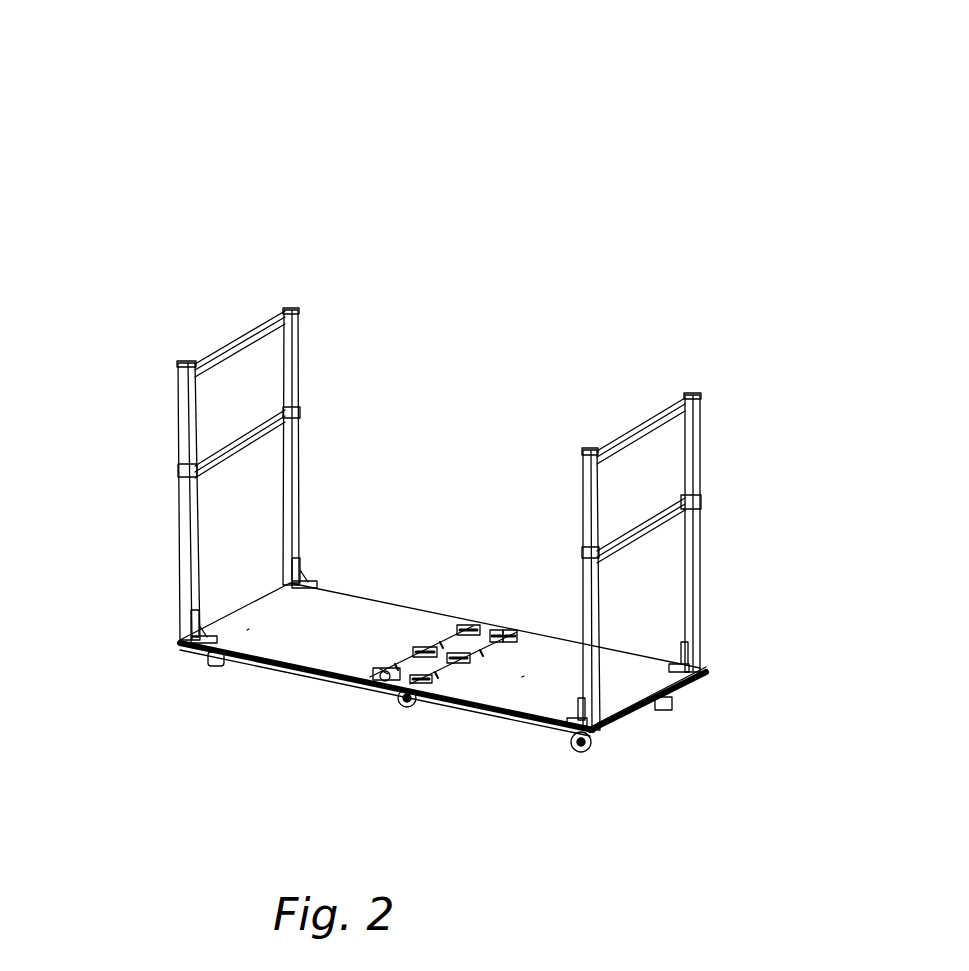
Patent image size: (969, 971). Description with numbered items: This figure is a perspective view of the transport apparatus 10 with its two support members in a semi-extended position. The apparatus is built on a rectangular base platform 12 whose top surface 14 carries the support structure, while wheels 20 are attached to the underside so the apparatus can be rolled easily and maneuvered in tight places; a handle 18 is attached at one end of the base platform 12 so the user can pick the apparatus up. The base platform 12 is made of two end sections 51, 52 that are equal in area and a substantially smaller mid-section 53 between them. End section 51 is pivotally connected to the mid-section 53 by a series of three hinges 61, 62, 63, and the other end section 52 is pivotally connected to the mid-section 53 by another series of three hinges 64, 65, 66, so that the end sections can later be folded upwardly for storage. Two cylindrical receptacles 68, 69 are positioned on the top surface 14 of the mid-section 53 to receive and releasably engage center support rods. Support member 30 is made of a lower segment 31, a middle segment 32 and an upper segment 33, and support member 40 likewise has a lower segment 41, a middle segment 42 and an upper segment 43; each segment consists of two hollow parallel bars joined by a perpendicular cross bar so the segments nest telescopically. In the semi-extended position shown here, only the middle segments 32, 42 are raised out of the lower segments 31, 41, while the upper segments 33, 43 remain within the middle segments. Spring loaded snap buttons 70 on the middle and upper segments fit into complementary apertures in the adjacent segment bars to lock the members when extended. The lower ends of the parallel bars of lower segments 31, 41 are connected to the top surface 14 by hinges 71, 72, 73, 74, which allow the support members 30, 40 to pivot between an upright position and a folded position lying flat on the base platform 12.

The transport apparatus 10 is at (146, 127).
The base platform 12 is at (264, 680).
The top surface 14 is at (333, 633).
The handle 18 is at (664, 712).
The wheels 20 is at (210, 672).
The support member 30 is at (171, 358).
The lower segment 31 is at (300, 480).
The middle segment 32 is at (297, 398).
The upper segment 33 is at (232, 337).
The support member 40 is at (708, 385).
The lower segment 41 is at (693, 558).
The middle segment 42 is at (657, 430).
The upper segment 43 is at (633, 433).
The end section 51 is at (247, 630).
The end section 52 is at (522, 677).
The mid-section 53 is at (422, 650).
The hinge 61 is at (370, 690).
The hinge 62 is at (422, 670).
The hinge 63 is at (465, 627).
The hinge 64 is at (445, 703).
The hinge 65 is at (460, 662).
The hinge 66 is at (512, 630).
The cylindrical receptacle 68 is at (387, 677).
The cylindrical receptacle 69 is at (491, 628).
The spring loaded snap buttons 70 is at (295, 325).
The hinge 71 is at (182, 646).
The hinge 72 is at (305, 572).
The hinge 73 is at (555, 727).
The hinge 74 is at (690, 687).